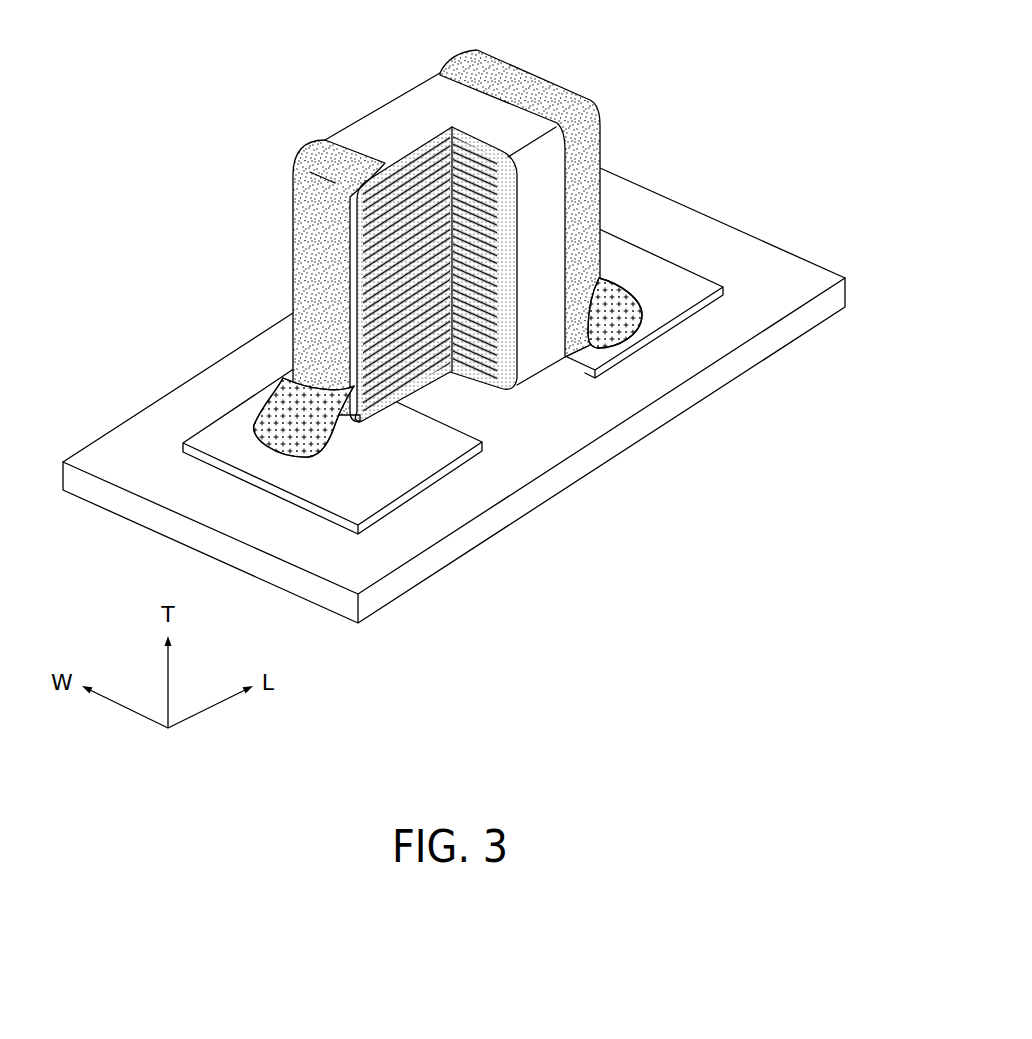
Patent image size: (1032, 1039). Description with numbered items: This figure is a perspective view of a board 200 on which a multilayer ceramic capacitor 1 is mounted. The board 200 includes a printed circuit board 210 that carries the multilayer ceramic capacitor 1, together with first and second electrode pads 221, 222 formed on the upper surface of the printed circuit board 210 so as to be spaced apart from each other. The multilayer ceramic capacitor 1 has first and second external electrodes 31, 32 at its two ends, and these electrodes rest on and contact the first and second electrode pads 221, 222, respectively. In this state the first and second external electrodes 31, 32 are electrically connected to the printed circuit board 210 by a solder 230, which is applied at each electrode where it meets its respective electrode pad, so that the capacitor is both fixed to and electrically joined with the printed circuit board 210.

The multilayer ceramic capacitor 1 is at (378, 95).
The first external electrode 31 is at (322, 142).
The second external electrode 32 is at (472, 56).
The board 200 is at (688, 427).
The printed circuit board 210 is at (577, 468).
The first electrode pad 221 is at (390, 470).
The second electrode pad 222 is at (692, 287).
The solder 230 is at (608, 297).